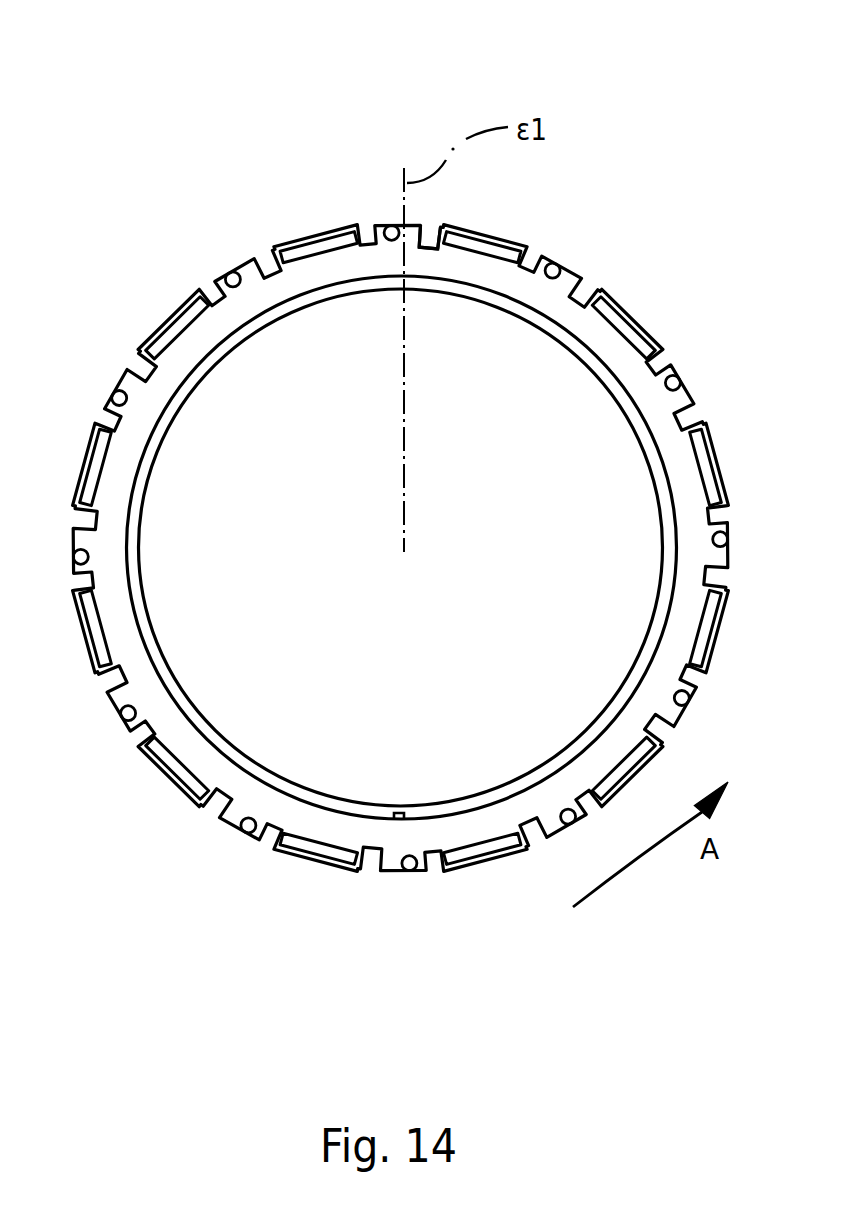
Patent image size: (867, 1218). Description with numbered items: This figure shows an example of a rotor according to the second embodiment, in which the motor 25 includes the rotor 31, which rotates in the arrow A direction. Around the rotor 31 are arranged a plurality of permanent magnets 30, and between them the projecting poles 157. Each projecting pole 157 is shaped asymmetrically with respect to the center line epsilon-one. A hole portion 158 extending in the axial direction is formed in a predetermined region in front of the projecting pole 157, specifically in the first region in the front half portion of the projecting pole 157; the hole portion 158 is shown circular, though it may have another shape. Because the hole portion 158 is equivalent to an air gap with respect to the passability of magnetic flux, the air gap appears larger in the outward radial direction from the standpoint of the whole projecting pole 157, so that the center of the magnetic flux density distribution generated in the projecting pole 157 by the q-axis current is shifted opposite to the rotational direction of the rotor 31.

The motor 25 is at (594, 95).
The rotor 31 is at (663, 284).
The permanent magnet 30 is at (485, 250).
The projecting pole 157 is at (424, 238).
The hole portion 158 is at (386, 226).